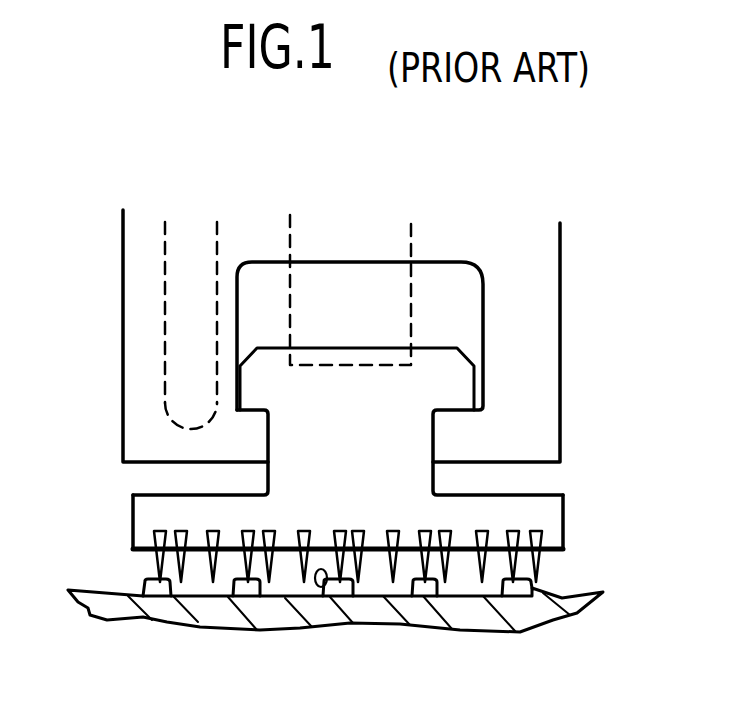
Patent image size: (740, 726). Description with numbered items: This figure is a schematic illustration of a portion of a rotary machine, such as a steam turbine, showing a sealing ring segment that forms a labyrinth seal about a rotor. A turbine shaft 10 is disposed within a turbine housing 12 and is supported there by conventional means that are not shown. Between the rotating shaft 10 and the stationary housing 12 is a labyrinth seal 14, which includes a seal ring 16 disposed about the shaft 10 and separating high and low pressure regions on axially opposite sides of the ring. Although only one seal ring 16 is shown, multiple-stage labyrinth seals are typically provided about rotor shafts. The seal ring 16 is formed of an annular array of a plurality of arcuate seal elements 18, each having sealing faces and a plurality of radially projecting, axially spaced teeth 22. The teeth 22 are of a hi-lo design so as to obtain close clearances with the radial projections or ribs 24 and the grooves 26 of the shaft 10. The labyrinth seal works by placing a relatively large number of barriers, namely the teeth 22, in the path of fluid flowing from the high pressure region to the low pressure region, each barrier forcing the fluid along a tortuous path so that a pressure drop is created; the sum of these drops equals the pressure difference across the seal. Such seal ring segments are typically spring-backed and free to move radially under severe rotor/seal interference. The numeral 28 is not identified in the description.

The turbine shaft 10 is at (118, 592).
The turbine housing 12 is at (122, 338).
The labyrinth seal 14 is at (596, 556).
The seal ring 16 is at (418, 470).
The arcuate seal elements 18 is at (170, 496).
The teeth 22 is at (450, 563).
The radial projections or ribs 24 is at (322, 590).
The grooves 26 is at (276, 597).
The terminal pin 28 is at (553, 563).